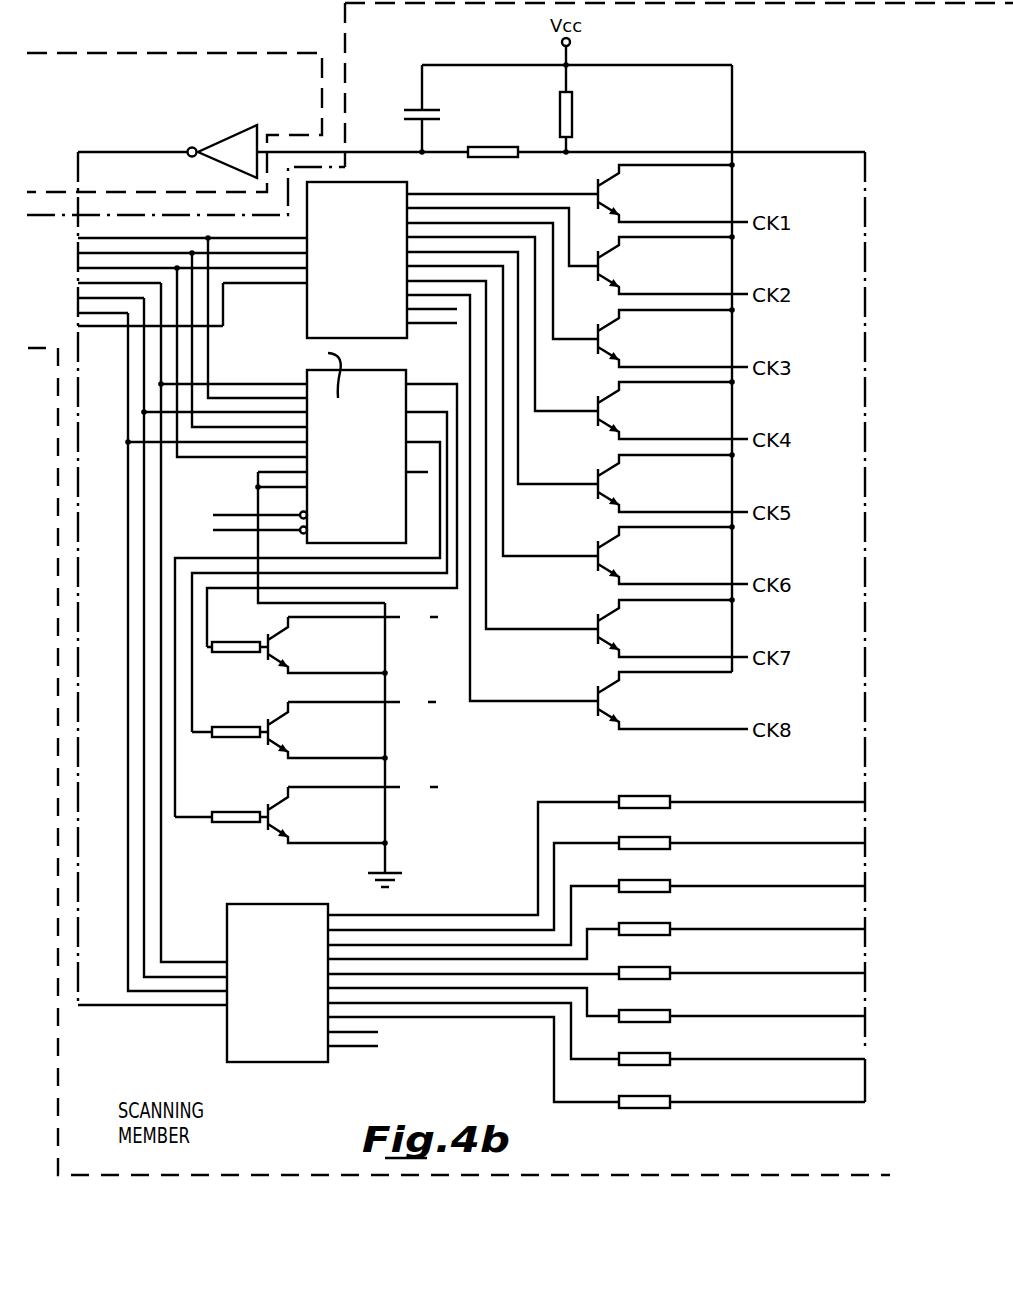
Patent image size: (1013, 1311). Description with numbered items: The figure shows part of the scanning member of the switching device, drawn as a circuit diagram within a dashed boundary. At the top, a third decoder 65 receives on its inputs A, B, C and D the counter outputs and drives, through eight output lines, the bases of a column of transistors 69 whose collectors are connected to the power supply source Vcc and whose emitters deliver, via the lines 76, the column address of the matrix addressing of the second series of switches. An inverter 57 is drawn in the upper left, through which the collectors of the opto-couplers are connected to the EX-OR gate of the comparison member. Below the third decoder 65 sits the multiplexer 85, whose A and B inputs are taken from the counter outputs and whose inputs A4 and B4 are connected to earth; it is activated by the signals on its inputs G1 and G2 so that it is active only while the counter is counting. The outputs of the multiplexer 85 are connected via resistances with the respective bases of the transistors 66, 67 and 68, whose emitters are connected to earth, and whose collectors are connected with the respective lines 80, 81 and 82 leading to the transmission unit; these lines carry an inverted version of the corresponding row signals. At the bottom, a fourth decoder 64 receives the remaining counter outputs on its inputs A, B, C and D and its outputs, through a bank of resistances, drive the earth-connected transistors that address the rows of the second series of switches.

The inverter 57 is at (262, 136).
The fourth decoder 64 is at (292, 903).
The third decoder 65 is at (407, 184).
The transistor 66 is at (267, 642).
The transistor 67 is at (267, 727).
The transistor 68 is at (267, 812).
The transistors 69 is at (672, 163).
The lines 76 is at (760, 198).
The line 80 is at (363, 618).
The line 81 is at (362, 703).
The line 82 is at (363, 788).
The multiplexer 85 is at (404, 536).